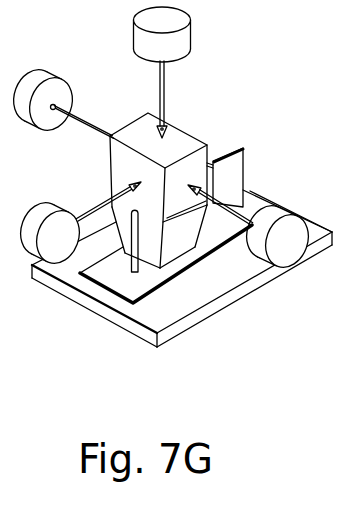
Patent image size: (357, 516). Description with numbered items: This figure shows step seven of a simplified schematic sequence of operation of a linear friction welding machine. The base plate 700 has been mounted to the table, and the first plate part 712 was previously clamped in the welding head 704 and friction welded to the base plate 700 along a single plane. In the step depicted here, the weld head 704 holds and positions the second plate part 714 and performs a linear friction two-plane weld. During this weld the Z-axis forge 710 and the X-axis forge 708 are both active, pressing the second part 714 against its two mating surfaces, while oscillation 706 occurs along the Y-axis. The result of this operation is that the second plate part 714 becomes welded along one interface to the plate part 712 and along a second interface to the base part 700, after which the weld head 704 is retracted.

The base plate 700 is at (122, 287).
The welding head 704 is at (182, 137).
The Y-axis oscillation 706 is at (268, 210).
The X-axis forge 708 is at (97, 207).
The Z-axis forge 710 is at (163, 97).
The plate part 712 is at (232, 167).
The second plate part 714 is at (137, 273).